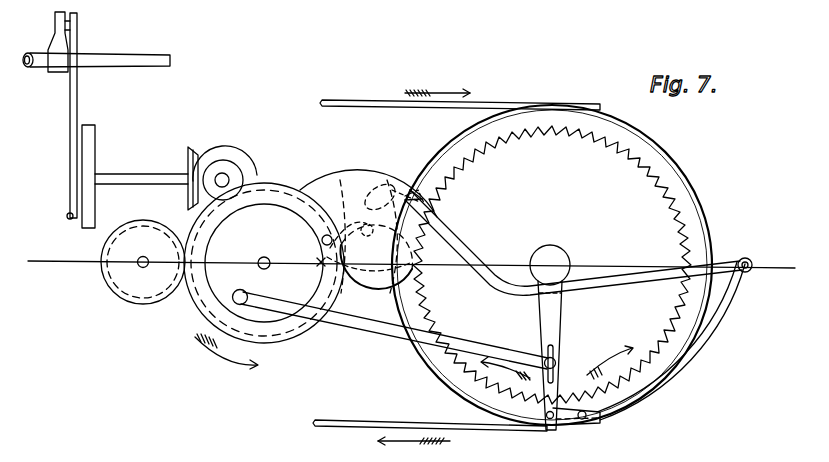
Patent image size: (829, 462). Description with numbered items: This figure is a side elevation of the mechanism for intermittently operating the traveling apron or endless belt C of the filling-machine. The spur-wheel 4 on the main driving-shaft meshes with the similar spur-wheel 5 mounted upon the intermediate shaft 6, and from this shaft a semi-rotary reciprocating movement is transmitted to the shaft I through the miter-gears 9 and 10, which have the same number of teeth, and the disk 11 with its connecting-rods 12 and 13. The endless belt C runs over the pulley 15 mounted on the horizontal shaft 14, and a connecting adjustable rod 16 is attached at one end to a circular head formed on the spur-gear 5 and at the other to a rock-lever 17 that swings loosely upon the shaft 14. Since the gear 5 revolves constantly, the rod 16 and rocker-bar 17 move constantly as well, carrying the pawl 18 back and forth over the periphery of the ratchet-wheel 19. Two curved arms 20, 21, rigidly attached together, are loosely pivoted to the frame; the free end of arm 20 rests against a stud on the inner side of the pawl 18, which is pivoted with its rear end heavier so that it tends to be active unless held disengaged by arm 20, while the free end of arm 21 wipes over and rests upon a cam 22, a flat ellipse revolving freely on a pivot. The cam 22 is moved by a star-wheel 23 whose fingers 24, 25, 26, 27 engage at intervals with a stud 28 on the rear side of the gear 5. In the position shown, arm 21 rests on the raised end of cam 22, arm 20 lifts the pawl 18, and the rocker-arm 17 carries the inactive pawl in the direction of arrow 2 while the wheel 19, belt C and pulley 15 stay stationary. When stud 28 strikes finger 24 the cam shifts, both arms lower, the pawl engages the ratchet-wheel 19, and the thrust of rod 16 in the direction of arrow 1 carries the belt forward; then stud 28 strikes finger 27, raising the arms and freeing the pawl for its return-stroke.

The shaft I is at (96, 52).
The spur-wheel 4 is at (143, 262).
The spur-wheel 5 is at (264, 263).
The intermediate shaft 6 is at (266, 259).
The miter-gear 9 is at (225, 173).
The miter-gear 10 is at (183, 178).
The disk 11 is at (88, 160).
The connecting-rod 12 is at (82, 116).
The connecting-rod 13 is at (54, 42).
The horizontal shaft 14 is at (550, 265).
The pulley 15 is at (552, 265).
The connecting adjustable rod 16 is at (391, 330).
The rock-lever 17 is at (550, 355).
The pawl 18 is at (583, 427).
The ratchet-wheel 19 is at (552, 265).
The curved arm 20 is at (721, 318).
The curved arm 21 is at (573, 248).
The cam 22 is at (390, 197).
The star-wheel 23 is at (365, 224).
The finger 24 is at (318, 264).
The finger 25 is at (357, 207).
The finger 26 is at (418, 199).
The finger 27 is at (391, 289).
The stud 28 is at (322, 242).
The endless belt C is at (456, 258).
The arrow 1 is at (505, 371).
The arrow 2 is at (610, 362).